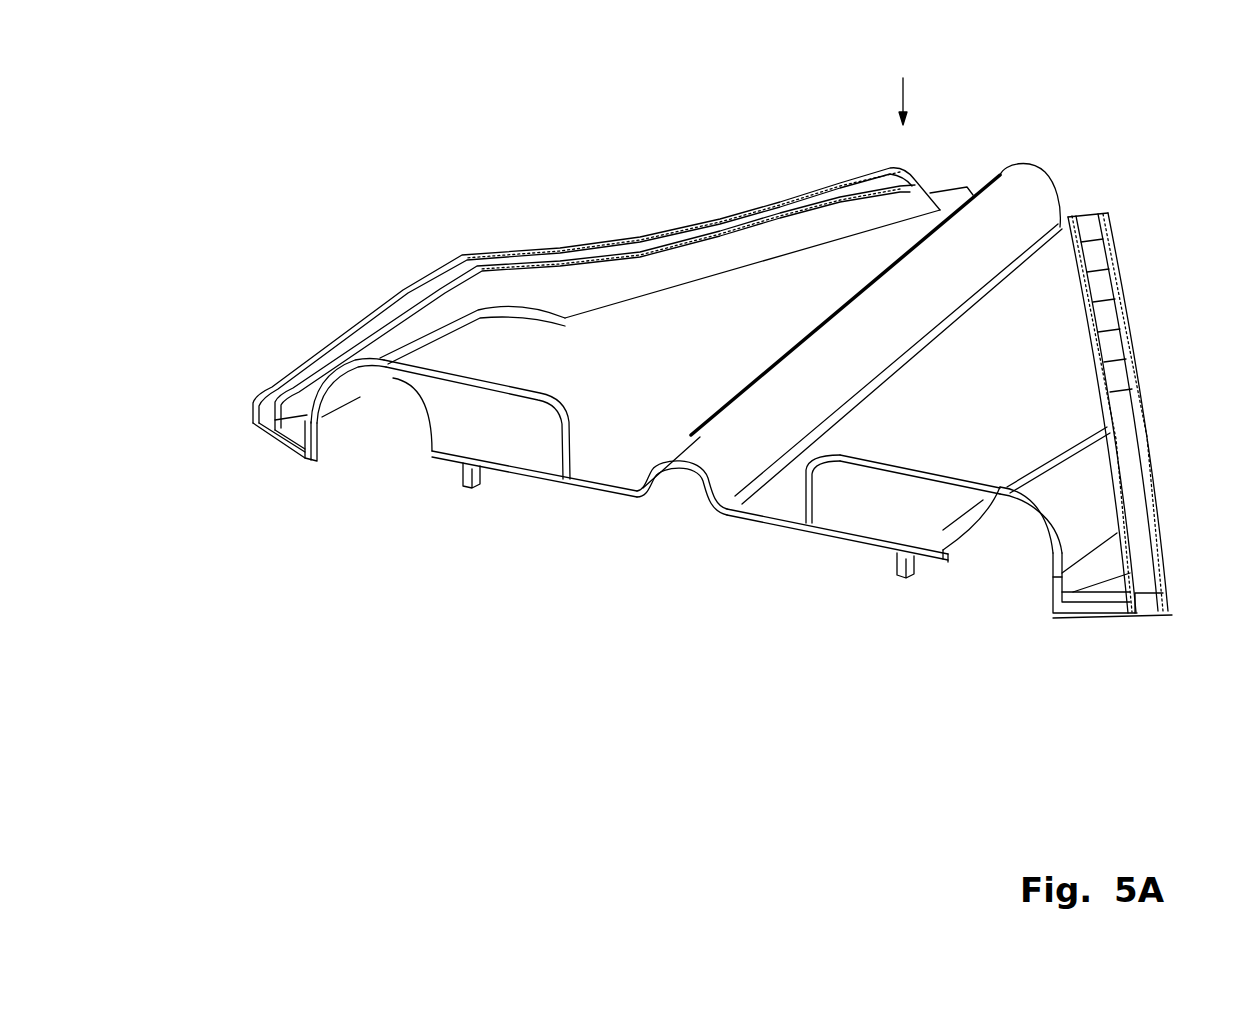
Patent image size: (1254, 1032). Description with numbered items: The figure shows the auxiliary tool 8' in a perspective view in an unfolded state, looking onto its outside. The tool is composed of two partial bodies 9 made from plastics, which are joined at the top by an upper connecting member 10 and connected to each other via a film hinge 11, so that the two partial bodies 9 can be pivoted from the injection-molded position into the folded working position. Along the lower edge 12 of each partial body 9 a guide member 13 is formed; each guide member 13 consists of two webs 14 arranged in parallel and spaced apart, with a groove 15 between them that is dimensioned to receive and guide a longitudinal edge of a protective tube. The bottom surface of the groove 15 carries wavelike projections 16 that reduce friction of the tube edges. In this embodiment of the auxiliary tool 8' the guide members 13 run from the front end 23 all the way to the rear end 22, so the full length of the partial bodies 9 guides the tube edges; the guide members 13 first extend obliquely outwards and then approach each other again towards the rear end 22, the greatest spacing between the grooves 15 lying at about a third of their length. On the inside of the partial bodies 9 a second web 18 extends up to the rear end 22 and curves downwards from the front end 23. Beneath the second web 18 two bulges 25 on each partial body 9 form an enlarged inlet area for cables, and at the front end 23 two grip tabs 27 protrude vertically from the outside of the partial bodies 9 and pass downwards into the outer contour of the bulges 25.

The auxiliary tool 8' is at (902, 86).
The partial body 9 is at (837, 287).
The upper connecting member 10 is at (1037, 173).
The film hinge 11 is at (1060, 227).
The lower edge 12 is at (277, 442).
The guide member 13 is at (752, 205).
The web 14 is at (697, 242).
The groove 15 is at (617, 250).
The projection 16 is at (1120, 383).
The second web 18 is at (468, 487).
The rear end 22 is at (1007, 170).
The front end 23 is at (700, 487).
The bulge 25 is at (393, 378).
The grip tab 27 is at (537, 450).